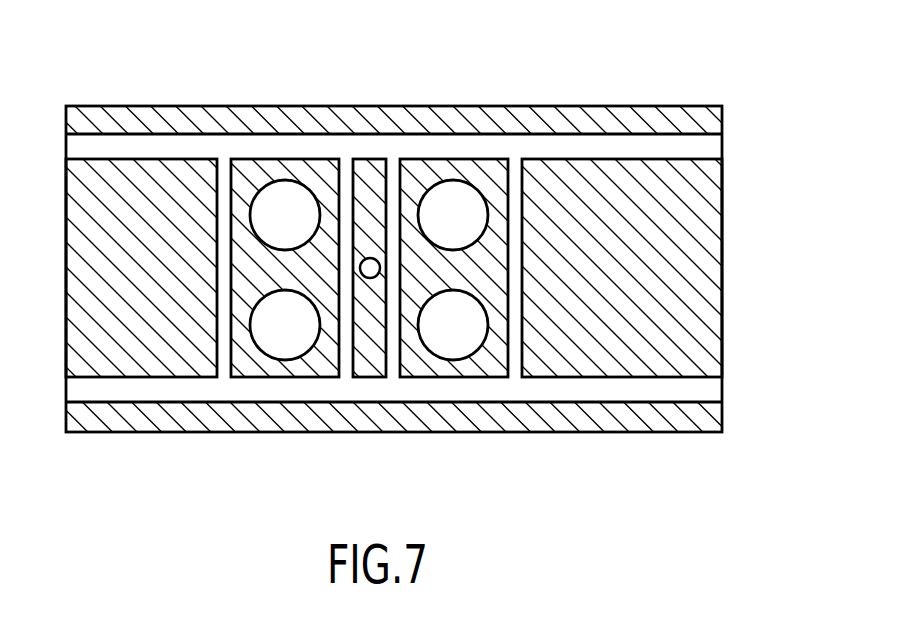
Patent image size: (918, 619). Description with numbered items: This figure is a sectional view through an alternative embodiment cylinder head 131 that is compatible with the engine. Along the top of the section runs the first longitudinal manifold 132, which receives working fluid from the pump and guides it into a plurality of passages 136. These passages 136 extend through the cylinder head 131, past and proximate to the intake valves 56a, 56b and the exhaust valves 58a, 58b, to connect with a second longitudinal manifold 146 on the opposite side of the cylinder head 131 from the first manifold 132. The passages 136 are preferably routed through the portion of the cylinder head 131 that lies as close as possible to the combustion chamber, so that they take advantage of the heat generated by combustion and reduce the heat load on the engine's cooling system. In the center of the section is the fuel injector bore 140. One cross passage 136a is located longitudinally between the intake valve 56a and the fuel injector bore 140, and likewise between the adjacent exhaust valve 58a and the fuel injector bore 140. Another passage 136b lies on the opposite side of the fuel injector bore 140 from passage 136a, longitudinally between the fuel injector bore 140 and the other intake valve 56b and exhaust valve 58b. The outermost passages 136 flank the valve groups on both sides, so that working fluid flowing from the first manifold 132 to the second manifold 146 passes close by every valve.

The cylinder head 131 is at (722, 262).
The first longitudinal manifold 132 is at (717, 146).
The second longitudinal manifold 146 is at (713, 389).
The passages 136 is at (223, 185).
The passage 136a is at (348, 173).
The passage 136b is at (394, 170).
The intake valve 56a is at (277, 199).
The intake valve 56b is at (462, 192).
The exhaust valve 58a is at (273, 343).
The exhaust valve 58b is at (462, 342).
The fuel injector bore 140 is at (366, 278).